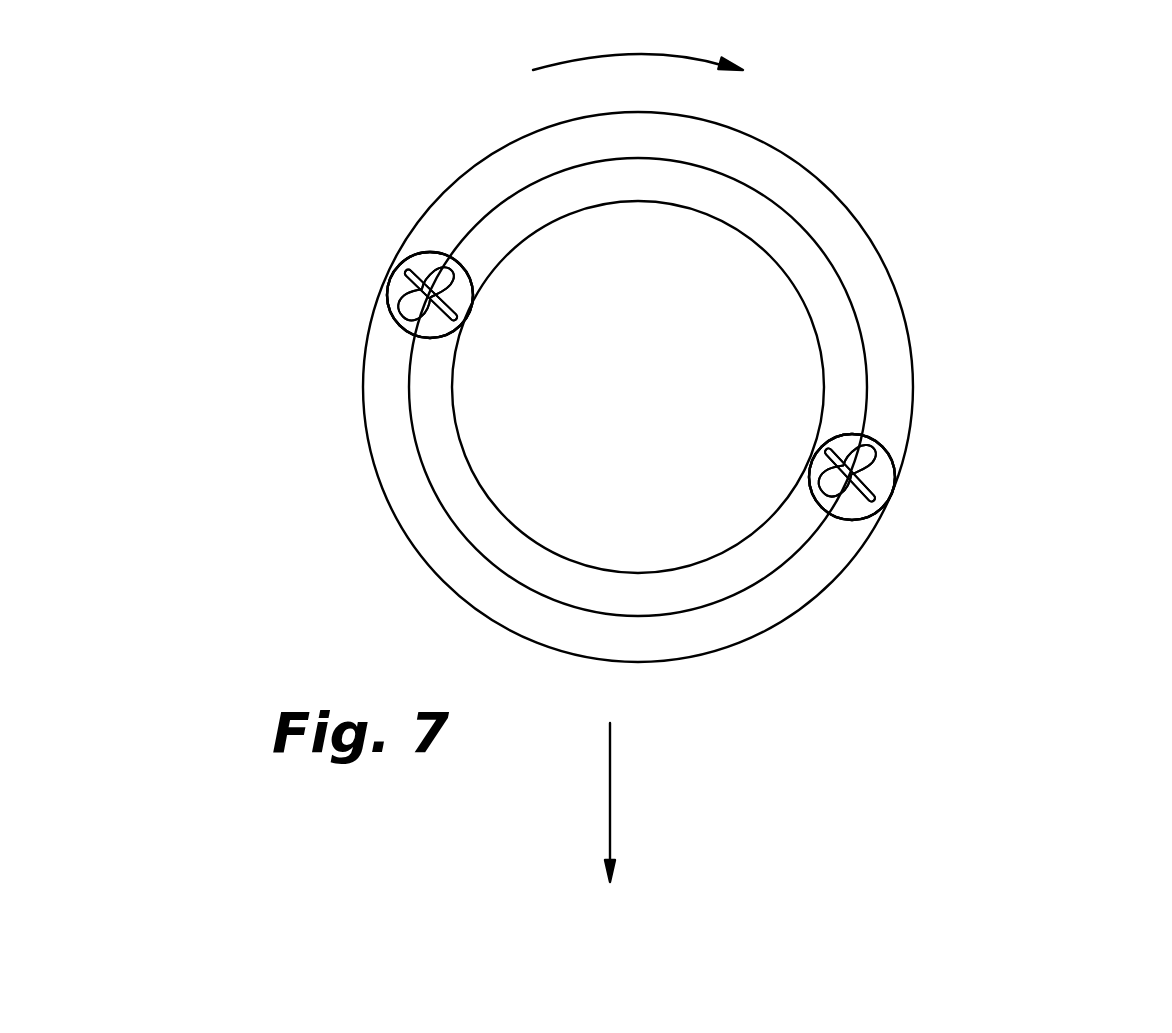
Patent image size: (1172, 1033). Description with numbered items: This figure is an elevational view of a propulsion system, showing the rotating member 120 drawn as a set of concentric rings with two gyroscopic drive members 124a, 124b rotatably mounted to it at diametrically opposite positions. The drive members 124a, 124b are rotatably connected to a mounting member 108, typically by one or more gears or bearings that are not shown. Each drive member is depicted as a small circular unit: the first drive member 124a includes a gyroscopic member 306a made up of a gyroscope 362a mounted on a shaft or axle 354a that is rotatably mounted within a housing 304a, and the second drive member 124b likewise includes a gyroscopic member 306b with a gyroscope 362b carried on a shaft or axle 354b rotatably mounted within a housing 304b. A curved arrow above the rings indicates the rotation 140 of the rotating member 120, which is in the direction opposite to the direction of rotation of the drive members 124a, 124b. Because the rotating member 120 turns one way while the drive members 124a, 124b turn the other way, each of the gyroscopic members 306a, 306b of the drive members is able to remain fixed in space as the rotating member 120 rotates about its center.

The mounting member 108 is at (457, 253).
The rotating member 120 is at (895, 383).
The gyroscopic drive member 124a is at (893, 455).
The gyroscopic drive member 124b is at (430, 253).
The rotation 140 is at (600, 53).
The housing 304a is at (868, 525).
The housing 304b is at (397, 293).
The gyroscopic member 306a is at (812, 505).
The gyroscopic member 306b is at (405, 342).
The shaft or axle 354a is at (878, 494).
The shaft or axle 354b is at (455, 322).
The gyroscope 362a is at (817, 470).
The gyroscope 362b is at (407, 312).